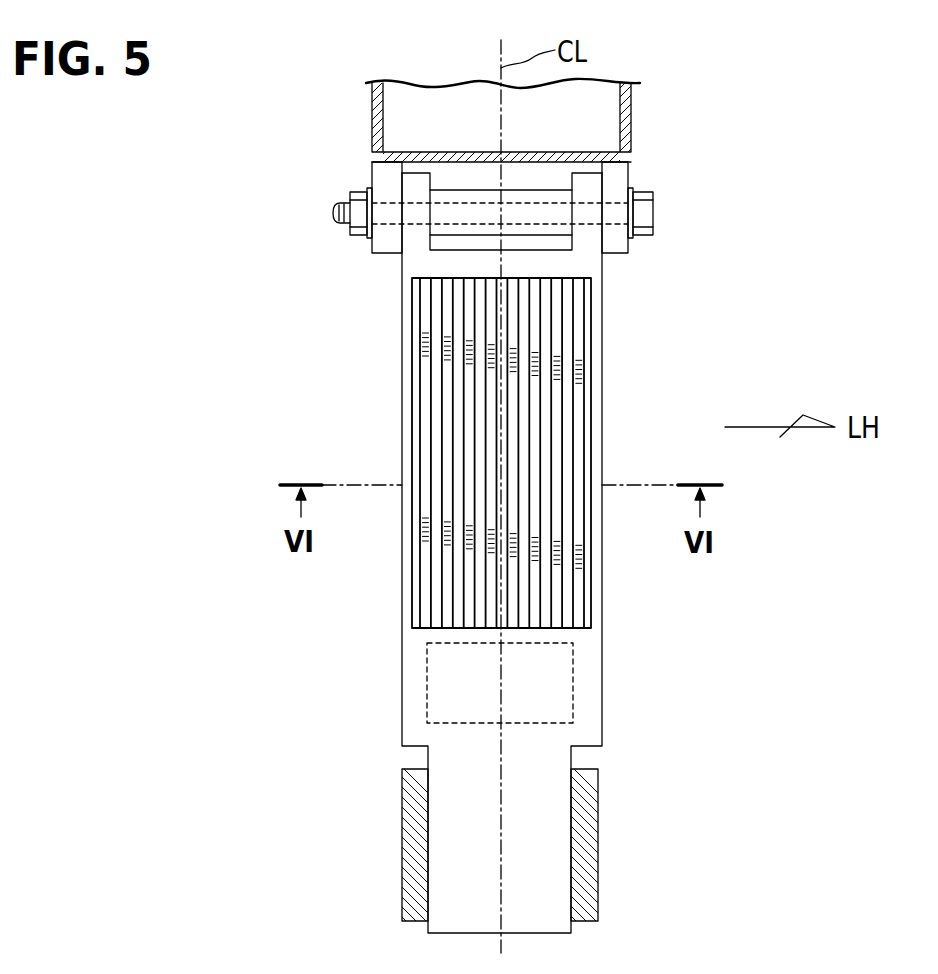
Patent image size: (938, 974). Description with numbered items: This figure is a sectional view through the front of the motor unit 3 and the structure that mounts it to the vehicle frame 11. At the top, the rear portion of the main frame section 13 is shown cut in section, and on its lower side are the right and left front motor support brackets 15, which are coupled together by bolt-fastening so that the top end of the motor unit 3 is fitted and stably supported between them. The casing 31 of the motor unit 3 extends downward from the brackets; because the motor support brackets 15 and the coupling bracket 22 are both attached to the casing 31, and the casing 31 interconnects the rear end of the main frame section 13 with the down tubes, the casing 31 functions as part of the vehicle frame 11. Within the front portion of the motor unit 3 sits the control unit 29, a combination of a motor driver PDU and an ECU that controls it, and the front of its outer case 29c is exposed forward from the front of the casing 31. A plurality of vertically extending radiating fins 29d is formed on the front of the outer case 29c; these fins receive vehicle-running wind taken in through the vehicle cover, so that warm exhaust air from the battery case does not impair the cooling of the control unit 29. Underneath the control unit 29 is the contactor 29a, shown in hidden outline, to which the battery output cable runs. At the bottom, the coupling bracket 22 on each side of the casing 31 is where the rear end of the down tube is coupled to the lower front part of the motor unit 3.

The main frame section 13 is at (631, 130).
The vehicle frame 11 is at (543, 120).
The front motor support bracket 15 is at (373, 175).
The casing 31 is at (602, 318).
The motor unit 3 is at (535, 553).
The outer case 29c is at (591, 395).
The control unit 29 is at (535, 453).
The radiating fins 29d is at (466, 420).
The contactor 29a is at (573, 673).
The coupling bracket 22 is at (402, 822).